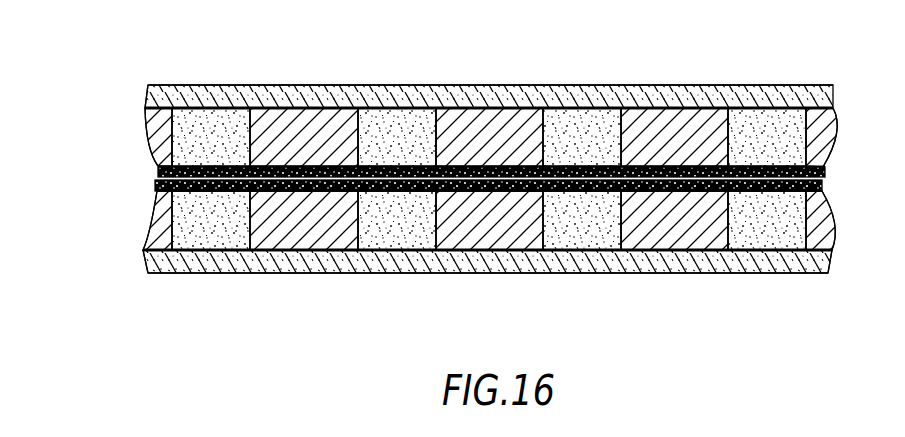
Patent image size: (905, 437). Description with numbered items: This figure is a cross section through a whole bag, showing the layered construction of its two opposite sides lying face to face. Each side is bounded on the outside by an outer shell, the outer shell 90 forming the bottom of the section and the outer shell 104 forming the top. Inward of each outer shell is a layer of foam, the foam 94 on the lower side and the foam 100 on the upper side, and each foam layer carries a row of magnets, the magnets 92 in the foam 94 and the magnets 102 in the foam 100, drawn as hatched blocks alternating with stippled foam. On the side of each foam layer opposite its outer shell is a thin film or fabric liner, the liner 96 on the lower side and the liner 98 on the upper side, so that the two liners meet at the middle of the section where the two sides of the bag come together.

The outer shell 90 is at (152, 272).
The magnets 92 is at (283, 240).
The foam 94 is at (765, 230).
The film or fabric liner 96 is at (157, 185).
The film or fabric liner 98 is at (162, 170).
The foam 100 is at (491, 99).
The magnets 102 is at (302, 112).
The outer shell 104 is at (155, 87).